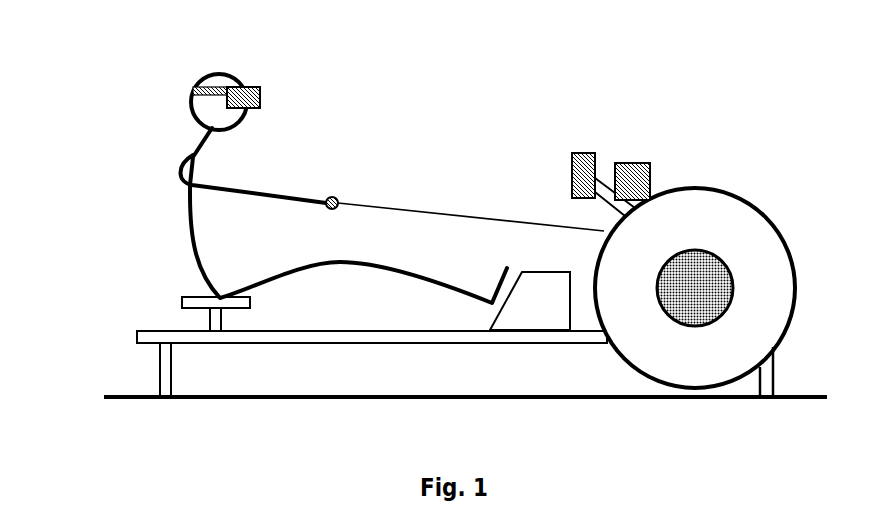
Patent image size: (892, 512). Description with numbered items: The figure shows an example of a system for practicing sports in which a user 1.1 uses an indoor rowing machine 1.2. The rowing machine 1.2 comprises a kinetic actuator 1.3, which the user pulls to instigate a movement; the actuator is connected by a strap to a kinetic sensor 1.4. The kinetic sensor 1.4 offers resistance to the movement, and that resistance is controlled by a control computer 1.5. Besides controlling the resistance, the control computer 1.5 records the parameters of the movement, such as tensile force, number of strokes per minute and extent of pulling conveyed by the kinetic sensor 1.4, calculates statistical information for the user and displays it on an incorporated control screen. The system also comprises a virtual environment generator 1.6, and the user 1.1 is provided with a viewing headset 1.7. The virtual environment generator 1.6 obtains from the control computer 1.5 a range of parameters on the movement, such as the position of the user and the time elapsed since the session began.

The user 1.1 is at (192, 212).
The indoor rowing machine 1.2 is at (137, 337).
The kinetic actuator 1.3 is at (333, 197).
The kinetic sensor 1.4 is at (720, 254).
The control computer 1.5 is at (583, 153).
The virtual environment generator 1.6 is at (630, 163).
The viewing headset 1.7 is at (244, 87).